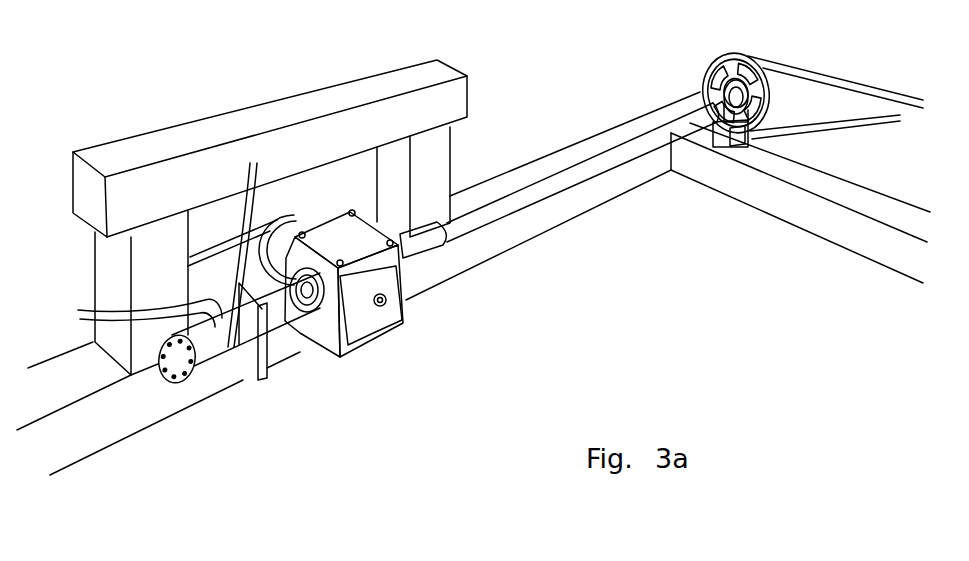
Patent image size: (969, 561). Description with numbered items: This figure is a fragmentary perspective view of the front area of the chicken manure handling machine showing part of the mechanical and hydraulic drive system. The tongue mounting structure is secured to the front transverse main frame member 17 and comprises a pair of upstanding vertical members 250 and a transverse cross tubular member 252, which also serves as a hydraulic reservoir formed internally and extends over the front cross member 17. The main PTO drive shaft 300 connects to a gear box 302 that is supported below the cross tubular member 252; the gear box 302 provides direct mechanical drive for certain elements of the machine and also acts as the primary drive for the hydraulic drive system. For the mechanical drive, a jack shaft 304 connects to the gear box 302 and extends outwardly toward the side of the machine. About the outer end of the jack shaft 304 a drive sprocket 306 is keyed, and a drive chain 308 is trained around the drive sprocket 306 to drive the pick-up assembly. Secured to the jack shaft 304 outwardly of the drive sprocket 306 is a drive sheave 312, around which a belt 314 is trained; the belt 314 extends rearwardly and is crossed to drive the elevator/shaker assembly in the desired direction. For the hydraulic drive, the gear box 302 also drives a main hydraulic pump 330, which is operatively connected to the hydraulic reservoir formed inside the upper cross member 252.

The front cross member 17 is at (88, 425).
The upstanding vertical members 250 is at (113, 300).
The transverse cross tubular member 252 is at (197, 133).
The main PTO drive shaft 300 is at (270, 210).
The gear box 302 is at (367, 318).
The jack shaft 304 is at (590, 165).
The drive sprocket 306 is at (713, 90).
The drive chain 308 is at (760, 102).
The drive sheave 312 is at (730, 57).
The belt 314 is at (790, 63).
The main hydraulic pump 330 is at (205, 350).